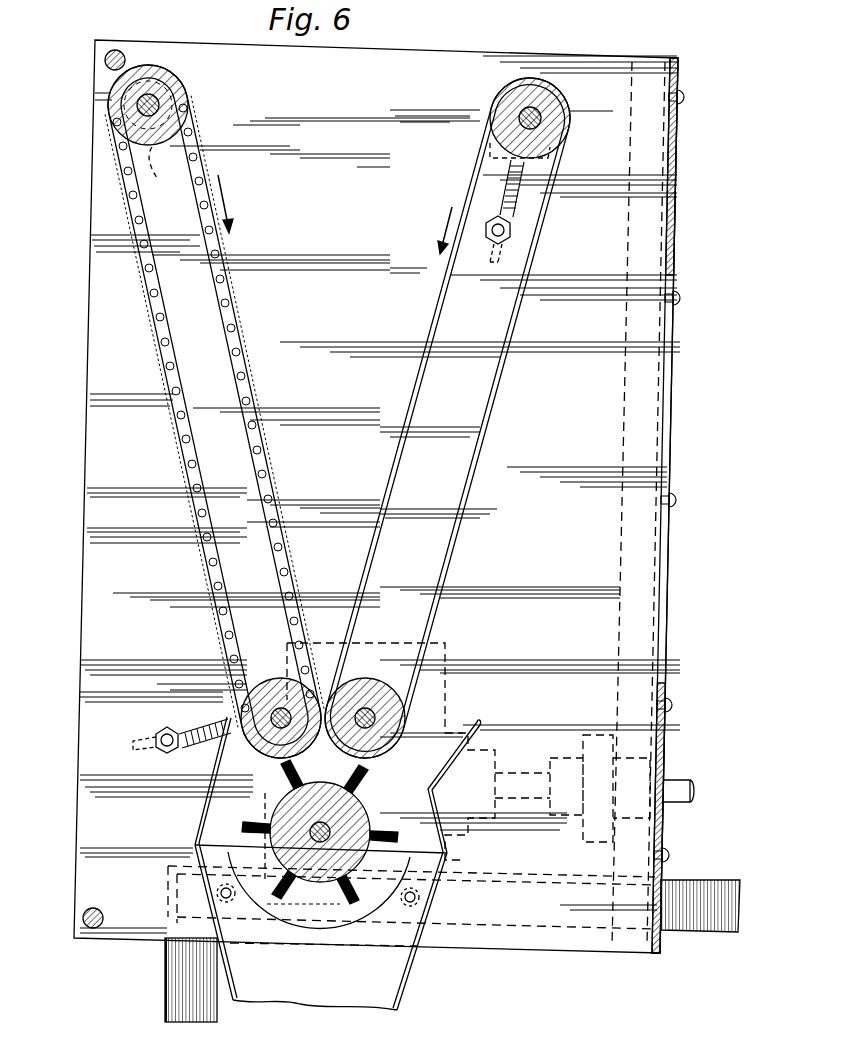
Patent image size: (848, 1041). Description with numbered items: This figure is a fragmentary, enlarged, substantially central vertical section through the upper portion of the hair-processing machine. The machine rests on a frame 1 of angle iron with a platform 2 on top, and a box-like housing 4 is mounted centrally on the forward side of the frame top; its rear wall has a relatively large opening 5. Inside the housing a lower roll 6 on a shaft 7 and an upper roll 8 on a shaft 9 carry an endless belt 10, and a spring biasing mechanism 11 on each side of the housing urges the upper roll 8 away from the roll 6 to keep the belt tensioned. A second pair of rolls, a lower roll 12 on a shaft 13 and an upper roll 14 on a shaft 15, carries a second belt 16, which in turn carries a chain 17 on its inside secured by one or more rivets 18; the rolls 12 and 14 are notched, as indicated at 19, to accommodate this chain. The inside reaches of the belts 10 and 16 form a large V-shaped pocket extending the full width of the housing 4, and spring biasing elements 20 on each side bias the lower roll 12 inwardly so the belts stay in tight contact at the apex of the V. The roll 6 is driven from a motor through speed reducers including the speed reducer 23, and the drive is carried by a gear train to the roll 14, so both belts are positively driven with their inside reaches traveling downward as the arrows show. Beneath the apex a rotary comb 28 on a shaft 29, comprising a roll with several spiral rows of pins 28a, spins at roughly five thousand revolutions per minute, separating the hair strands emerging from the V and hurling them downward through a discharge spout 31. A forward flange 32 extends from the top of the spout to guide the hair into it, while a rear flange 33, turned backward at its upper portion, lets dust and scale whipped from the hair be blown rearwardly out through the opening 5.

The frame 1 is at (165, 983).
The platform 2 is at (480, 880).
The box-like housing 4 is at (615, 230).
The opening 5 is at (668, 565).
The lower roll 6 is at (368, 690).
The shaft 7 is at (376, 718).
The upper roll 8 is at (530, 108).
The shaft 9 is at (541, 118).
The endless belt 10 is at (497, 399).
The spring biasing mechanism 11 is at (520, 208).
The lower roll 12 is at (285, 682).
The shaft 13 is at (268, 715).
The upper roll 14 is at (175, 80).
The shaft 15 is at (148, 98).
The second belt 16 is at (208, 411).
The chain 17 is at (236, 344).
The rivets 18 is at (153, 318).
The notch 19 is at (165, 169).
The spring biasing elements 20 is at (173, 732).
The speed reducer 23 is at (447, 645).
The rotary comb 28 is at (345, 812).
The pins 28a is at (250, 820).
The shaft 29 is at (319, 842).
The discharge spout 31 is at (375, 985).
The forward flange 32 is at (216, 773).
The rear flange 33 is at (447, 756).